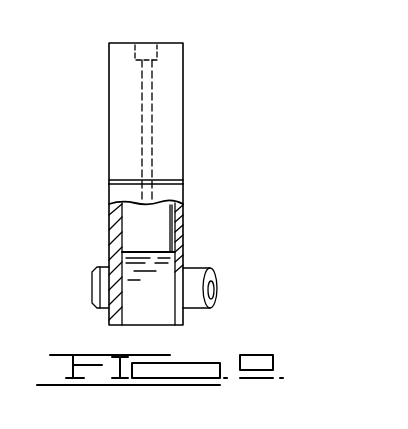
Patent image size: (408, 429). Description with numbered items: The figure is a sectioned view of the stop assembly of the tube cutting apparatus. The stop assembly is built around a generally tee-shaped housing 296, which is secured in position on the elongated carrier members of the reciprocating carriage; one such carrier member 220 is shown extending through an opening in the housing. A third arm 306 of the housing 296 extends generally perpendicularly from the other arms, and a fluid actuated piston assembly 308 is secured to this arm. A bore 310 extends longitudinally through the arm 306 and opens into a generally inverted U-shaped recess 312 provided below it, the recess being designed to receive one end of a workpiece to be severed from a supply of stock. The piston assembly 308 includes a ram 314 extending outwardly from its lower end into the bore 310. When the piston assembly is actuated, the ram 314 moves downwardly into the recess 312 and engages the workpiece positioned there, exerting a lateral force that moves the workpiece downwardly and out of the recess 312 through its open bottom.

The fluid actuated piston assembly 308 is at (187, 99).
The third arm 306 is at (109, 212).
The bore 310 is at (167, 223).
The ram 314 is at (160, 238).
The inverted U-shaped recess 312 is at (157, 320).
The elongated carrier member 220 is at (203, 269).
The tee-shaped housing 296 is at (109, 315).